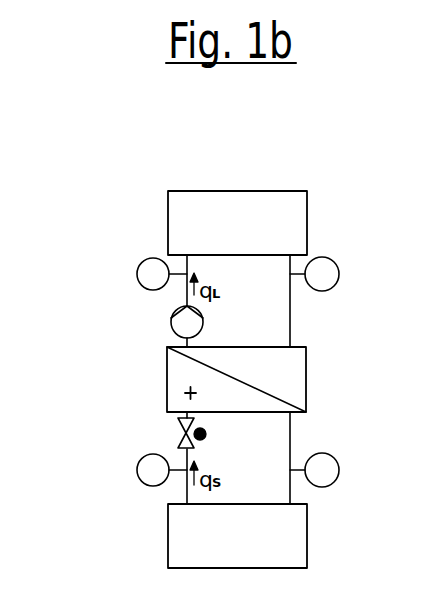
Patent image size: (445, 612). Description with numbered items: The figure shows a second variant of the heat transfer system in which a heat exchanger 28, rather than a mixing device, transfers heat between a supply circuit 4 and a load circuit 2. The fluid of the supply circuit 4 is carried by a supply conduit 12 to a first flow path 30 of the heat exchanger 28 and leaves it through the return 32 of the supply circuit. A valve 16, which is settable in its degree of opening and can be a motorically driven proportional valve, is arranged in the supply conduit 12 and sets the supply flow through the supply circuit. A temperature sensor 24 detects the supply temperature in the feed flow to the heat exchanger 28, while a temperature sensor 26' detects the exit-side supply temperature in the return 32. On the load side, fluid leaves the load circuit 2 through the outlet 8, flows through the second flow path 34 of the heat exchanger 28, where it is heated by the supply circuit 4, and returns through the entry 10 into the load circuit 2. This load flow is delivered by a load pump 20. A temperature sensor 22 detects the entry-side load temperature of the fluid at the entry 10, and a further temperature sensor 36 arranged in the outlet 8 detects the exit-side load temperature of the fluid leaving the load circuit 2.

The load circuit 2 is at (261, 202).
The supply circuit 4 is at (297, 553).
The outlet 8 is at (291, 331).
The entry 10 is at (136, 336).
The supply conduit 12 is at (187, 497).
The valve 16 is at (181, 432).
The load pump 20 is at (183, 302).
The temperature sensor 22 is at (142, 263).
The temperature sensor 24 is at (137, 470).
The temperature sensor 26' is at (365, 460).
The heat exchanger 28 is at (241, 373).
The first flow path 30 is at (177, 389).
The return 32 is at (291, 438).
The second flow path 34 is at (295, 366).
The temperature sensor 36 is at (334, 262).